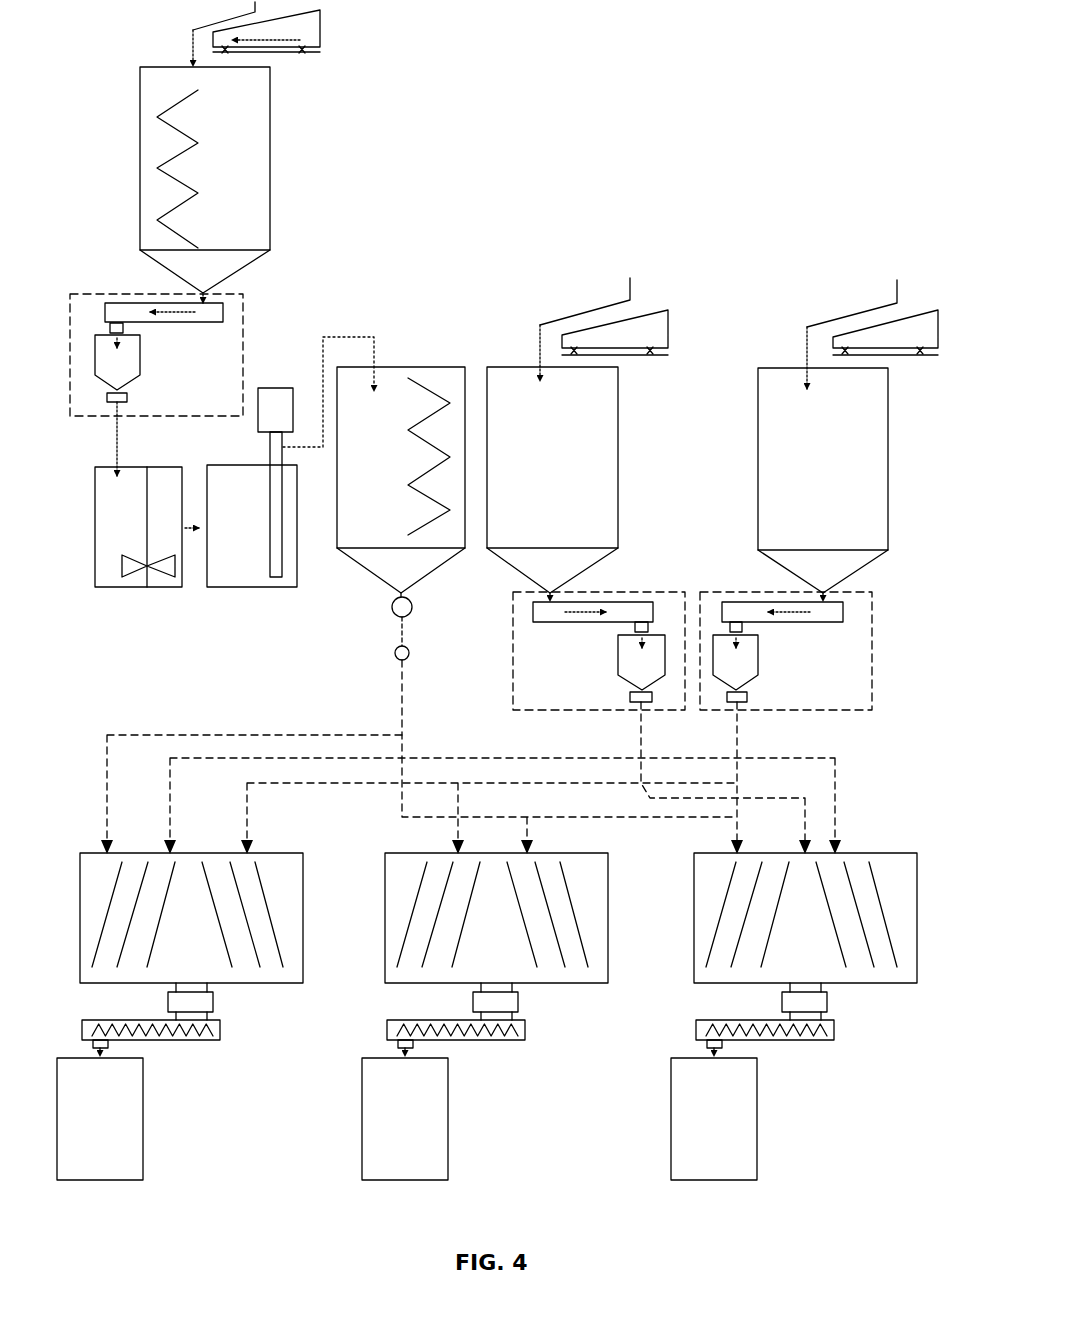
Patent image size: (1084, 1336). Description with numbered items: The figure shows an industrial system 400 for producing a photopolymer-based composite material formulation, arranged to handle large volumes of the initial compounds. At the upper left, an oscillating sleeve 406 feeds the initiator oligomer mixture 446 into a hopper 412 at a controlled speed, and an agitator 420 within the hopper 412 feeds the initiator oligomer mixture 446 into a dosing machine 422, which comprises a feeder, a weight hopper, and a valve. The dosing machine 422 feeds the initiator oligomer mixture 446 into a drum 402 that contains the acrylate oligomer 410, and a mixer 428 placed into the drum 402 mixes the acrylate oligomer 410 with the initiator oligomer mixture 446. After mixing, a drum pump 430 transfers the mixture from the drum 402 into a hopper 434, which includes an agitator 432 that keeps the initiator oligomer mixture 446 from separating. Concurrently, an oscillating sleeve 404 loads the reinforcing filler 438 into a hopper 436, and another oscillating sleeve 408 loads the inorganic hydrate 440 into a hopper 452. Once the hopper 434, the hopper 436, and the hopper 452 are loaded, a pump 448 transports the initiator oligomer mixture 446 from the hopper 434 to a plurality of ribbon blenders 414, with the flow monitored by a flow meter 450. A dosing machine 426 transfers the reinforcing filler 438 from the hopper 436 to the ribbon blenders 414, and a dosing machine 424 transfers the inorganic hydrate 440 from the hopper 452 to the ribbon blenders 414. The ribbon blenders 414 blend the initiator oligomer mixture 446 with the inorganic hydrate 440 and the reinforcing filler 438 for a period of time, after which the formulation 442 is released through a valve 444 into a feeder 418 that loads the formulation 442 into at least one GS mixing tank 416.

The industrial system 400 is at (880, 58).
The drum 402 is at (120, 590).
The oscillating sleeve 404 is at (678, 321).
The oscillating sleeve 406 is at (340, 33).
The oscillating sleeve 408 is at (921, 281).
The acrylate oligomer 410 is at (245, 571).
The hopper 412 is at (273, 187).
The ribbon blenders 414 is at (386, 890).
The GS mixing tank 416 is at (144, 1083).
The feeder 418 is at (218, 1040).
The agitator 420 is at (178, 131).
The dosing machine 422 is at (245, 323).
The dosing machine 424 is at (874, 620).
The dosing machine 426 is at (650, 593).
The mixer 428 is at (147, 527).
The drum pump 430 is at (265, 432).
The agitator 432 is at (425, 388).
The hopper 434 is at (407, 367).
The hopper 436 is at (619, 393).
The reinforcing filler 438 is at (567, 499).
The inorganic hydrate 440 is at (841, 501).
The formulation 442 is at (119, 1131).
The valve 444 is at (214, 997).
The initiator oligomer mixture 446 is at (247, 135).
The pump 448 is at (415, 608).
The flow meter 450 is at (393, 653).
The hopper 452 is at (758, 440).